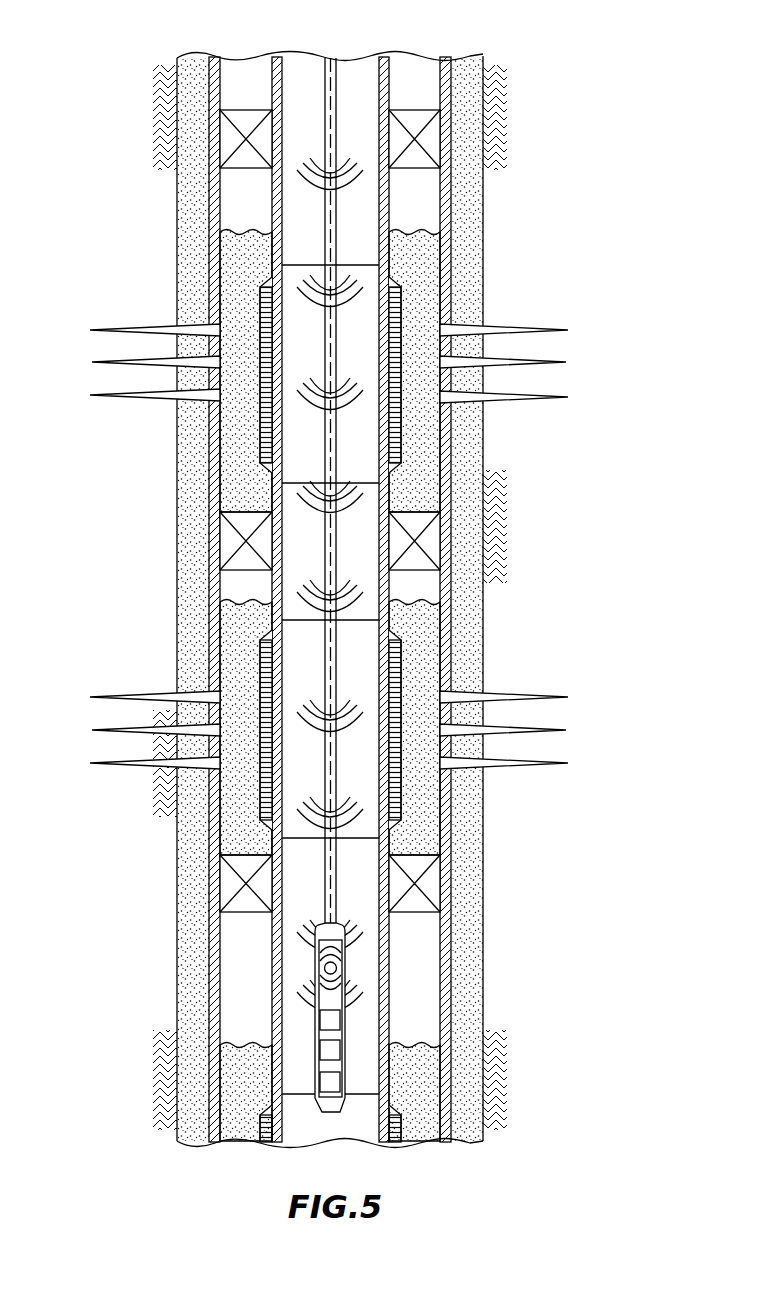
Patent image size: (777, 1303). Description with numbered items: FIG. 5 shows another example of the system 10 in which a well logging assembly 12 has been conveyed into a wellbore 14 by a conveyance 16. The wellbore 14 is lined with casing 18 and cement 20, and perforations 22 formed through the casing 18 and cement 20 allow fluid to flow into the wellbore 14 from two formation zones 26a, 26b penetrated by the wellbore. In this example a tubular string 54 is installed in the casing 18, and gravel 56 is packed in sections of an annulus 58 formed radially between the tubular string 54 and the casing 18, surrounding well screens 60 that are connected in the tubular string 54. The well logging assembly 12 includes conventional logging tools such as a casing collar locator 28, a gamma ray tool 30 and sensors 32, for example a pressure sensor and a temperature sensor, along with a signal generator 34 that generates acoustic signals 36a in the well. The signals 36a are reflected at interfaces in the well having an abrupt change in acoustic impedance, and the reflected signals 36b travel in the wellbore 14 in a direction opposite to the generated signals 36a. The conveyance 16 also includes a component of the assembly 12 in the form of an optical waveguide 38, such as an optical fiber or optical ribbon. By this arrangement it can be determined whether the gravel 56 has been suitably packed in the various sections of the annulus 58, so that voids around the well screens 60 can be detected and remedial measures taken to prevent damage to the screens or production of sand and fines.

The system 10 is at (100, 106).
The well logging assembly 12 is at (354, 1072).
The wellbore 14 is at (446, 972).
The conveyance 16 is at (327, 77).
The casing 18 is at (214, 590).
The cement 20 is at (178, 622).
The perforations 22 is at (512, 326).
The formation zone 26a is at (670, 707).
The formation zone 26b is at (670, 377).
The casing collar locator 28 is at (318, 1082).
The gamma ray tool 30 is at (318, 1052).
The sensors 32 is at (318, 1020).
The signal generator 34 is at (313, 970).
The acoustic signals 36a is at (352, 282).
The reflected signals 36b is at (310, 175).
The optical waveguide 38 is at (334, 78).
The tubular string 54 is at (396, 181).
The gravel 56 is at (258, 230).
The annulus 58 is at (242, 947).
The well screens 60 is at (261, 297).